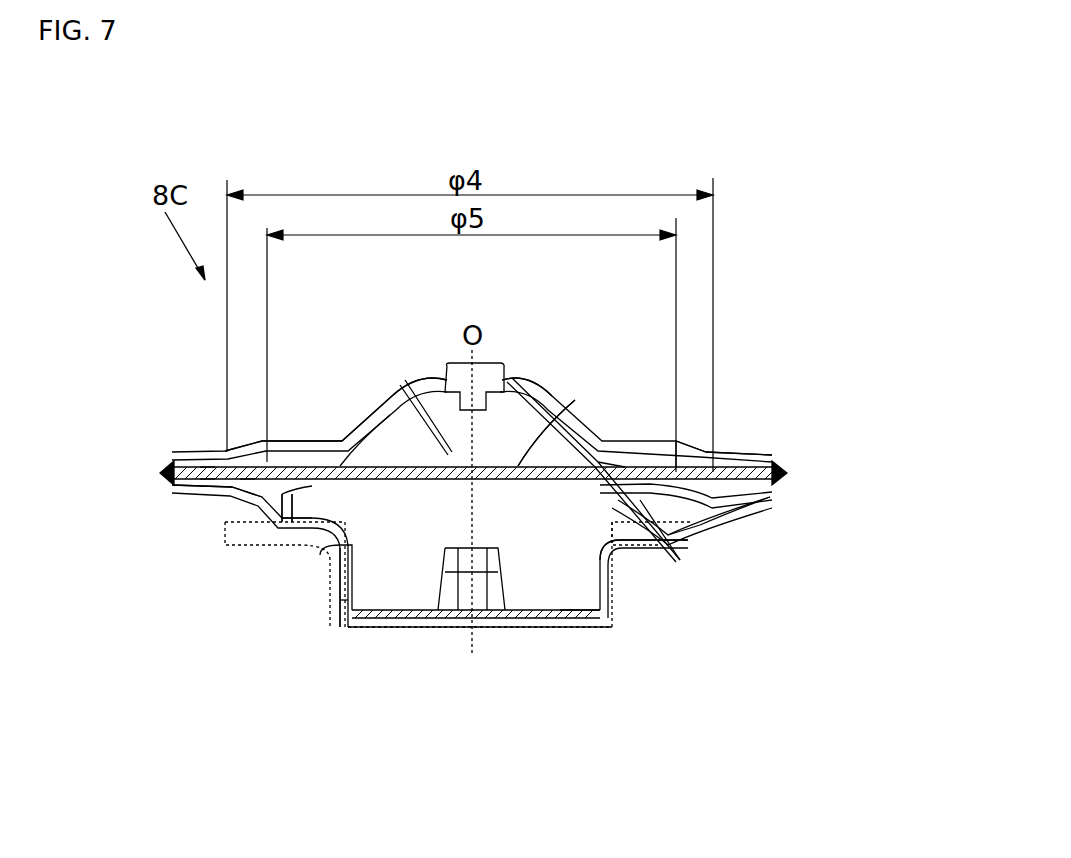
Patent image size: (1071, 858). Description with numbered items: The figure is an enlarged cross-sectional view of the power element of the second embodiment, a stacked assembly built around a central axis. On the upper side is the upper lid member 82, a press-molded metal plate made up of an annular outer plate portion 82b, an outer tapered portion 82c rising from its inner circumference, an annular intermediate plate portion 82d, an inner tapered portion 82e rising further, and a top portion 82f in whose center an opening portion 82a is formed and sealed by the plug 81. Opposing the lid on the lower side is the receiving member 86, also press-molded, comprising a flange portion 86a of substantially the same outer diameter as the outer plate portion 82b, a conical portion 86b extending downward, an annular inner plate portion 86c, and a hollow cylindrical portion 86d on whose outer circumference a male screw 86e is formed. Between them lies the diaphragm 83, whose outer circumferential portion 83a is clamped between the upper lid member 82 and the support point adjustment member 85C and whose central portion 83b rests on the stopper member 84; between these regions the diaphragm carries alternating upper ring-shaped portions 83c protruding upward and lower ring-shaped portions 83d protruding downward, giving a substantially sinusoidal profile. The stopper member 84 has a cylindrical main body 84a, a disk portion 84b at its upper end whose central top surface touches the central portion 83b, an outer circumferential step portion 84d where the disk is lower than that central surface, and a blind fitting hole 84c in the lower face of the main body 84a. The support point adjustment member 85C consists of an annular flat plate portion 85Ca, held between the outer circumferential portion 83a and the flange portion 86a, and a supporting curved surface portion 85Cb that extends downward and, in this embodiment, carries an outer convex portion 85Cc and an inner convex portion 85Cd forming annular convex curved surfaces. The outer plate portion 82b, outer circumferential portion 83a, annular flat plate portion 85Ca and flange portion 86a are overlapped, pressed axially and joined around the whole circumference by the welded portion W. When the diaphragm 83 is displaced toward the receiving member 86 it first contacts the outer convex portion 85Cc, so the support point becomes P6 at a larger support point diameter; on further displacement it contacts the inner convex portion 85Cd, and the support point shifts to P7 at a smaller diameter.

The welded portion W is at (790, 477).
The plug 81 is at (482, 362).
The upper lid member 82 is at (188, 455).
The opening portion 82a is at (449, 365).
The outer plate portion 82b is at (192, 460).
The outer tapered portion 82c is at (232, 448).
The intermediate plate portion 82d is at (316, 440).
The inner tapered portion 82e is at (360, 440).
The top portion 82f is at (414, 385).
The diaphragm 83 is at (415, 462).
The outer circumferential portion 83a is at (690, 480).
The central portion 83b is at (548, 462).
The upper ring-shaped portion 83c is at (606, 462).
The lower ring-shaped portion 83d is at (650, 500).
The stopper member 84 is at (512, 360).
The main body 84a is at (575, 612).
The disk portion 84b is at (620, 545).
The fitting hole 84c is at (478, 612).
The outer circumferential step portion 84d is at (290, 525).
The support point adjustment member 85C is at (758, 468).
The annular flat plate portion 85Ca is at (765, 512).
The supporting curved surface portion 85Cb is at (722, 518).
The outer convex portion 85Cc is at (718, 470).
The inner convex portion 85Cd is at (642, 470).
The receiving member 86 is at (342, 630).
The flange portion 86a is at (186, 490).
The conical portion 86b is at (215, 515).
The inner plate portion 86c is at (320, 545).
The hollow cylindrical portion 86d is at (378, 630).
The male screw 86e is at (330, 600).
The support point P6 is at (202, 485).
The support point P7 is at (248, 485).